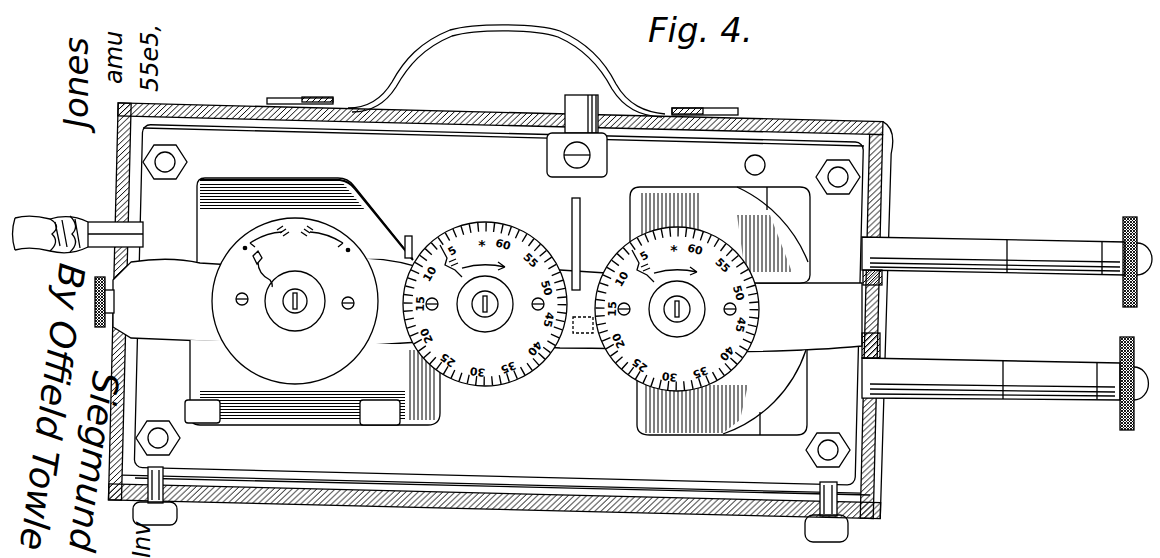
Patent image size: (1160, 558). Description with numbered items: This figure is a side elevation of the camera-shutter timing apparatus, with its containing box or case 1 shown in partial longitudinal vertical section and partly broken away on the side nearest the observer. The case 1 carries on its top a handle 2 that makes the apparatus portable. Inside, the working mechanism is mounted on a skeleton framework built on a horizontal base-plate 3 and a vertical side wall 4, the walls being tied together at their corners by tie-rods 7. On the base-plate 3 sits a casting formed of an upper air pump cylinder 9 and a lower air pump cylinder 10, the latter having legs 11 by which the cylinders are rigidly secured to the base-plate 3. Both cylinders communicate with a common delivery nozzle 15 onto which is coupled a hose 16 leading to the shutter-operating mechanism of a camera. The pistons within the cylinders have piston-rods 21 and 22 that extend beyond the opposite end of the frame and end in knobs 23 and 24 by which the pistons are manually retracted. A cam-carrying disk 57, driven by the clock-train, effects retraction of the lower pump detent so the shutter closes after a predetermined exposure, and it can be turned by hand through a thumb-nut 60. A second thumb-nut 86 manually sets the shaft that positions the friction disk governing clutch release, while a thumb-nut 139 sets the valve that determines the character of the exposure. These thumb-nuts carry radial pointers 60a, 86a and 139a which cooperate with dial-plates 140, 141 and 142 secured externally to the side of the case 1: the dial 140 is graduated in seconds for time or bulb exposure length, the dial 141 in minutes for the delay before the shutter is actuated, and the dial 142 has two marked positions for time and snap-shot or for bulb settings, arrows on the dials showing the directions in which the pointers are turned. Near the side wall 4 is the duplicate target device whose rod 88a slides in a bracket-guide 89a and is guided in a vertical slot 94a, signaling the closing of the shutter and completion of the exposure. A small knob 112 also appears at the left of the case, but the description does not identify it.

The containing box or case 1 is at (497, 514).
The handle 2 is at (560, 40).
The base-plate 3 is at (445, 480).
The side wall 4 is at (488, 132).
The tie-rods 7 is at (168, 158).
The upper air pump cylinder 9 is at (305, 220).
The lower air pump cylinder 10 is at (315, 382).
The legs 11 is at (204, 418).
The delivery nozzle 15 is at (100, 228).
The hose 16 is at (38, 232).
The piston-rod 21 is at (918, 250).
The piston-rod 22 is at (912, 372).
The knob 23 is at (1125, 222).
The knob 24 is at (1122, 412).
The cam-carrying disk 57 is at (720, 311).
The thumb-nut 60 is at (626, 348).
The radial pointer 60a is at (633, 251).
The thumb-nut 86 is at (488, 328).
The radial pointer 86a is at (441, 246).
The target 88a is at (572, 98).
The bracket-guide 89a is at (607, 150).
The vertical slot 94a is at (573, 206).
The adjusting knob 112 is at (96, 292).
The thumb-nut 139 is at (305, 325).
The radial pointer 139a is at (264, 262).
The dial-plate 140 is at (703, 250).
The dial-plate 141 is at (523, 252).
The dial-plate 142 is at (356, 253).